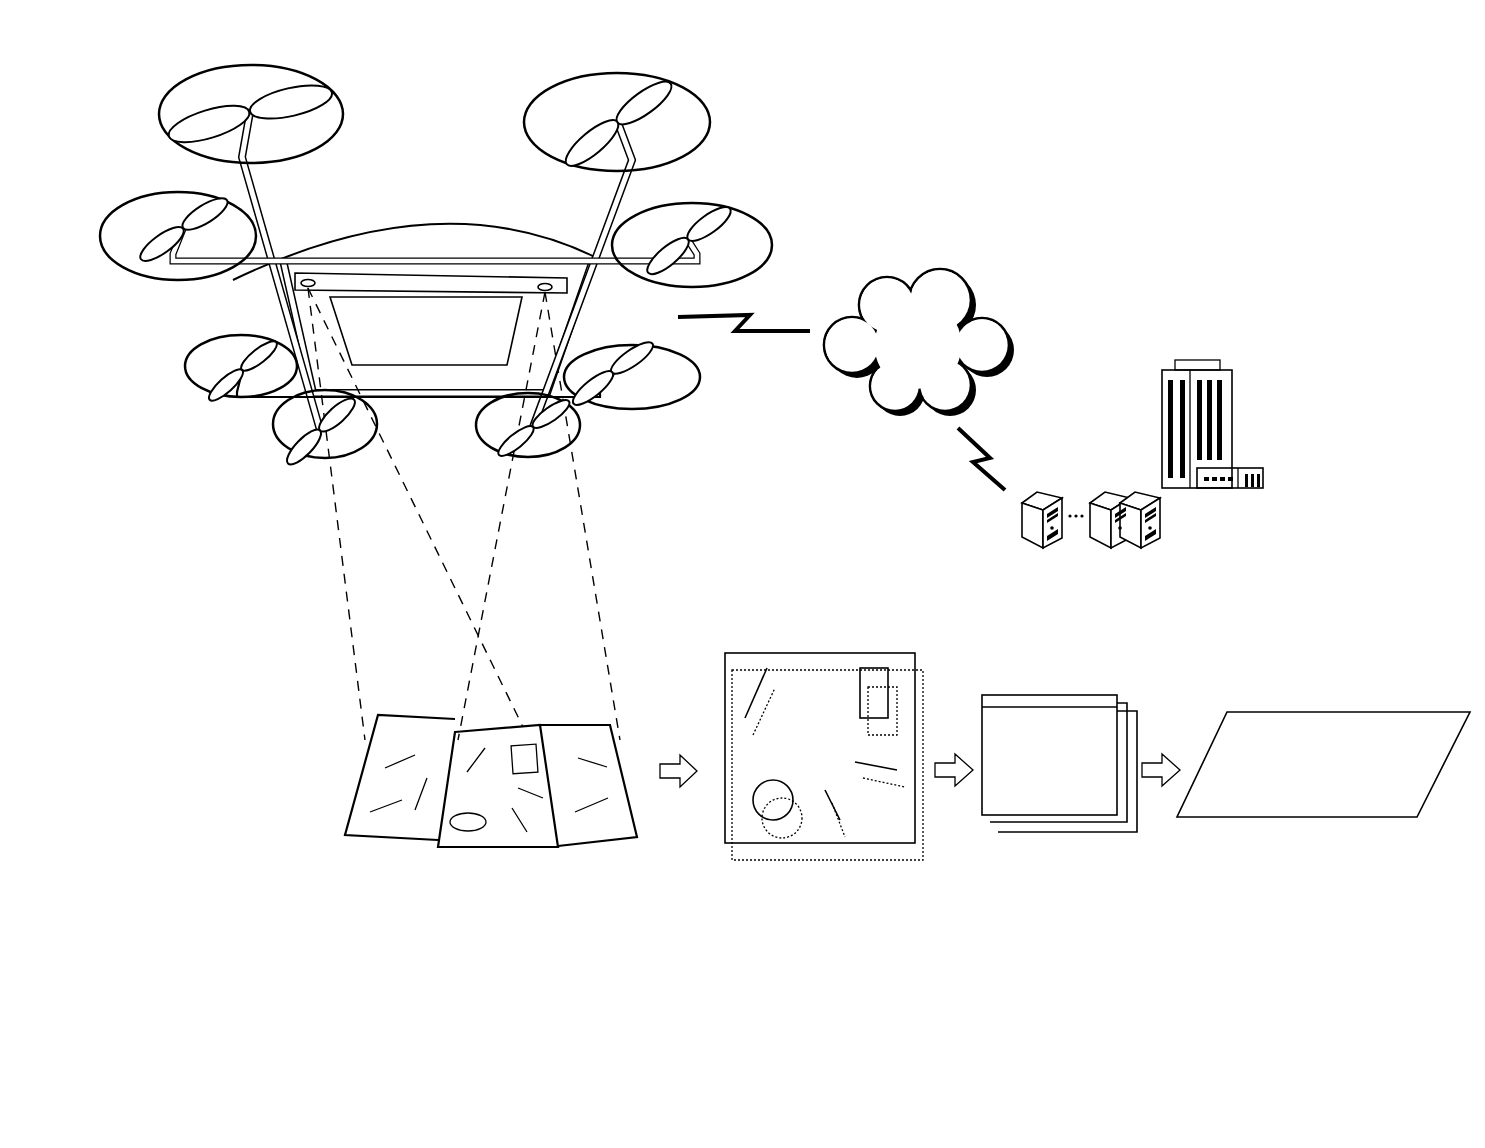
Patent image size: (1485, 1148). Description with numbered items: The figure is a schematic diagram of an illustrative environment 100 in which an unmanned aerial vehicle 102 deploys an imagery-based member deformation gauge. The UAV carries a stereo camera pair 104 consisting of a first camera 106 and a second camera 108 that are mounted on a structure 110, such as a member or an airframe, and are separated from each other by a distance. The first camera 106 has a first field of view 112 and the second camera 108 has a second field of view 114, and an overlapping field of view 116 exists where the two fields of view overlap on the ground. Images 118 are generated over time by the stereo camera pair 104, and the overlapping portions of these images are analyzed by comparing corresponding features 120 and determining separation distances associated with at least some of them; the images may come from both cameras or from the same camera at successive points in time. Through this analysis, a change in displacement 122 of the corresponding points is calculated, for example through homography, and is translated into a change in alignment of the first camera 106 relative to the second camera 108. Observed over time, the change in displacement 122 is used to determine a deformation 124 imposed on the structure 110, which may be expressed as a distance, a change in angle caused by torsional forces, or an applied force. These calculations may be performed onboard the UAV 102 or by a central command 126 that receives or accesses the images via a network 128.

The environment 100 is at (1254, 128).
The unmanned aerial vehicle 102 is at (275, 262).
The stereo camera pair 104 is at (330, 267).
The first camera 106 is at (308, 278).
The second camera 108 is at (610, 238).
The structure 110 is at (380, 290).
The first field of view 112 is at (363, 767).
The second field of view 114 is at (623, 762).
The overlapping field of view 116 is at (505, 830).
The images 118 is at (720, 633).
The corresponding features 120 is at (853, 685).
The change in displacement 122 is at (1028, 682).
The deformation 124 is at (1260, 682).
The central command 126 is at (1116, 471).
The network 128 is at (937, 371).